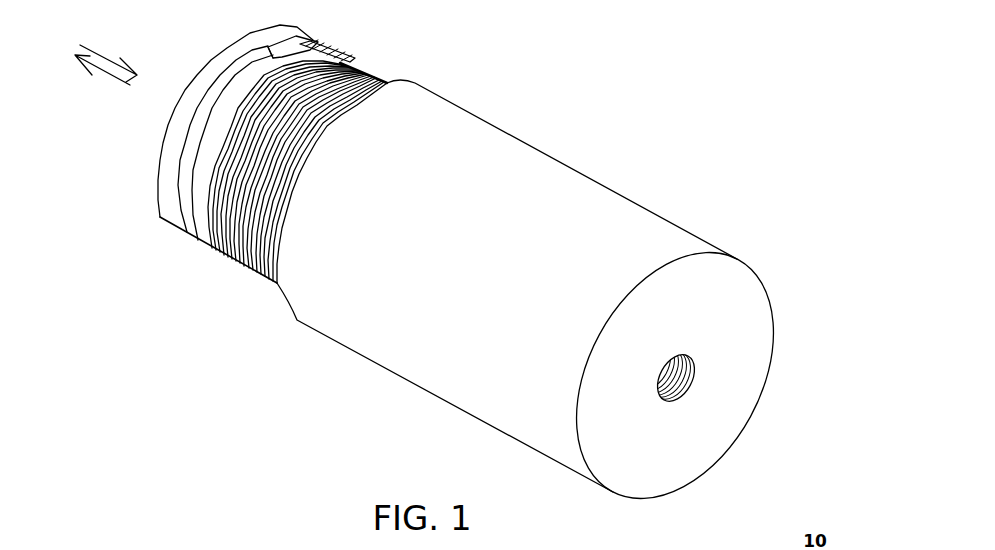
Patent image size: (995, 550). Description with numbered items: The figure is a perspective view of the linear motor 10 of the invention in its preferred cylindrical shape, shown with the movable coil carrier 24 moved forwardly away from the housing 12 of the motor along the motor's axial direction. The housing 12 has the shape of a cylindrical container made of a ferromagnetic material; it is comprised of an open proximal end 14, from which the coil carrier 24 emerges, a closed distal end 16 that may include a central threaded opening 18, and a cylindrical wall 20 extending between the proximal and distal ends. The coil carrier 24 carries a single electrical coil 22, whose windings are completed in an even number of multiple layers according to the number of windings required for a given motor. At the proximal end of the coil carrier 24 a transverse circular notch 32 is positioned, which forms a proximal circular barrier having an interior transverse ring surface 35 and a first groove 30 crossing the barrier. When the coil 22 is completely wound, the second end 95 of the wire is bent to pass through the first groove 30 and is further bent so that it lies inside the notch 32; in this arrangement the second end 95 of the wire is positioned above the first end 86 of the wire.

The linear motor 10 is at (588, 75).
The housing 12 is at (375, 390).
The open proximal end 14 is at (318, 310).
The closed distal end 16 is at (755, 300).
The central threaded opening 18 is at (688, 372).
The cylindrical wall 20 is at (573, 190).
The electrical coil 22 is at (222, 291).
The movable coil carrier 24 is at (147, 192).
The first groove 30 is at (314, 39).
The transverse circular notch 32 is at (195, 139).
The interior transverse ring surface 35 is at (272, 82).
The first end of the wire 86 is at (324, 40).
The second end of the wire 95 is at (268, 47).